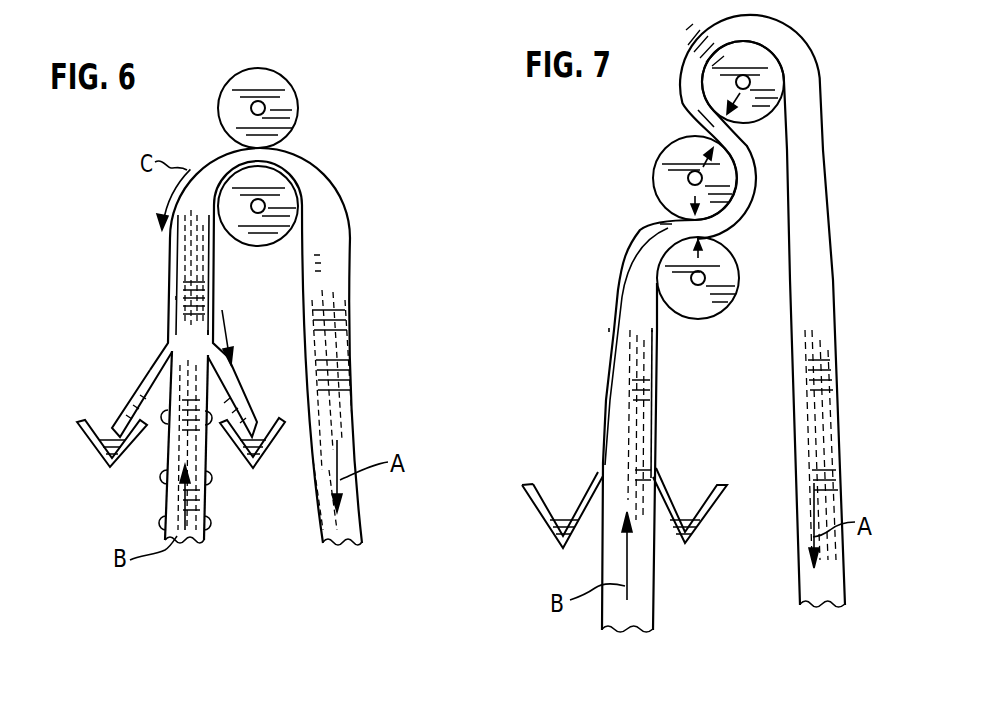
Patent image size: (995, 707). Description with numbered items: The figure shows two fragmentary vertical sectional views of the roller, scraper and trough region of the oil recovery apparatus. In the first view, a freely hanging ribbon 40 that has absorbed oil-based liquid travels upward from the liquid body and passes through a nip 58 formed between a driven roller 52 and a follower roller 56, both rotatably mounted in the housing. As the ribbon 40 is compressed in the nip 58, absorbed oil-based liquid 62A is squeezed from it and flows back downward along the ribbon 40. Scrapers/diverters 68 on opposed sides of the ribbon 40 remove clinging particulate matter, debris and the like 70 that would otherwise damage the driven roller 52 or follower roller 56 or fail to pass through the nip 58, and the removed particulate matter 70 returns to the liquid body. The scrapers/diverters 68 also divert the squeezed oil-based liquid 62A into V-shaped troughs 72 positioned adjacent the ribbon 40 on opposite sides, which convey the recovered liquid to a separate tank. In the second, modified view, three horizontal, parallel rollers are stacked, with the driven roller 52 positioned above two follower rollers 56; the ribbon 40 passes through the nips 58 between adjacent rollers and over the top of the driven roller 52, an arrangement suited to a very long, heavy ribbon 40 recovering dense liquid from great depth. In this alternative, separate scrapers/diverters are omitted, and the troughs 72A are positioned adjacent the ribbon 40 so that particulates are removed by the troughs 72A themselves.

In FIG. 6, the ribbon 40 is at (343, 279).
In FIG. 7, the ribbon 40 is at (823, 153).
In FIG. 6, the driven roller 52 is at (285, 119).
In FIG. 7, the driven roller 52 is at (774, 66).
In FIG. 6, the follower roller 56 is at (295, 187).
In FIG. 7, the follower roller 56 is at (662, 163).
In FIG. 7, the nip 58 is at (688, 106).
In FIG. 6, the oil-based liquid 62A is at (169, 255).
In FIG. 7, the oil-based liquid 62A is at (606, 380).
In FIG. 6, the scrapers/diverters 68 is at (157, 370).
In FIG. 6, the particulate matter, debris and the like 70 is at (160, 427).
In FIG. 6, the V-shaped trough 72 is at (95, 454).
In FIG. 7, the trough 72A is at (543, 521).